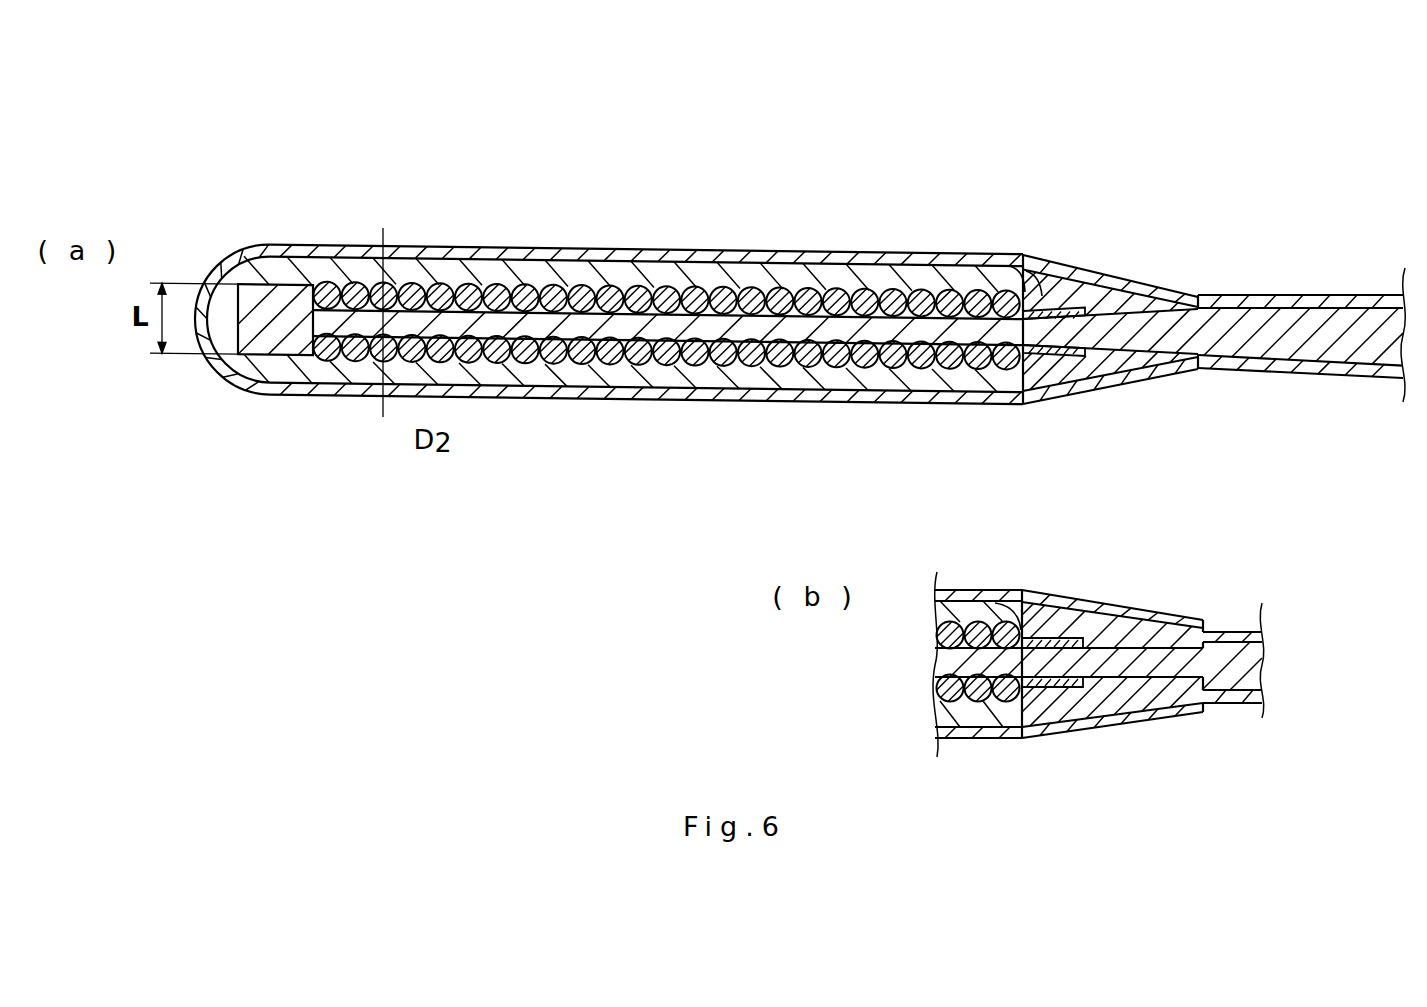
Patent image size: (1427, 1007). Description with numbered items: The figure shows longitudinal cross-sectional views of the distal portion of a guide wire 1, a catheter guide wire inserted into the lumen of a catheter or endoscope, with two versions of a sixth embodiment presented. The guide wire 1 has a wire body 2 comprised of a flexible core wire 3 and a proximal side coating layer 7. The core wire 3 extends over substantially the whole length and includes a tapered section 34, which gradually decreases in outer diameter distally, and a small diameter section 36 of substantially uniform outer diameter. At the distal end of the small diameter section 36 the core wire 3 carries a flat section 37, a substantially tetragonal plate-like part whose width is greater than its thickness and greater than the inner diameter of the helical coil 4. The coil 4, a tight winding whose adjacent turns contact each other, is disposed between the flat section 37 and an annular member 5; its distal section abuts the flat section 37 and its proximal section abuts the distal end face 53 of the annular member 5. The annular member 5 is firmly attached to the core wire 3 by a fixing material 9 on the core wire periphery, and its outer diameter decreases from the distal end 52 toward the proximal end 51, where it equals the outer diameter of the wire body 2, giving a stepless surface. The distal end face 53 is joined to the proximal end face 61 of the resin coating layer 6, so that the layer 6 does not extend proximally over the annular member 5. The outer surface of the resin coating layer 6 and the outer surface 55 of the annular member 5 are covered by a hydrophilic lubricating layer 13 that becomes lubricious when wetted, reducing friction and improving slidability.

The guide wire 1 is at (1171, 113).
The wire body 2 is at (1351, 290).
The core wire 3 is at (1317, 328).
The helical coil 4 is at (742, 293).
The annular member 5 is at (1070, 295).
The resin coating layer 6 is at (600, 277).
The proximal side coating layer 7 is at (1320, 373).
The fixing material 9 is at (1065, 368).
The hydrophilic lubricating layer 13 is at (832, 262).
The tapered section 34 is at (1258, 328).
The small diameter section 36 is at (495, 325).
The flat section 37 is at (277, 318).
The proximal end of annular member 51 is at (1198, 296).
The distal end of annular member 52 is at (1026, 263).
The distal end face of annular member 53 is at (1010, 268).
The outer surface of annular member 55 is at (1130, 288).
The proximal end face of resin coating layer 61 is at (1045, 300).